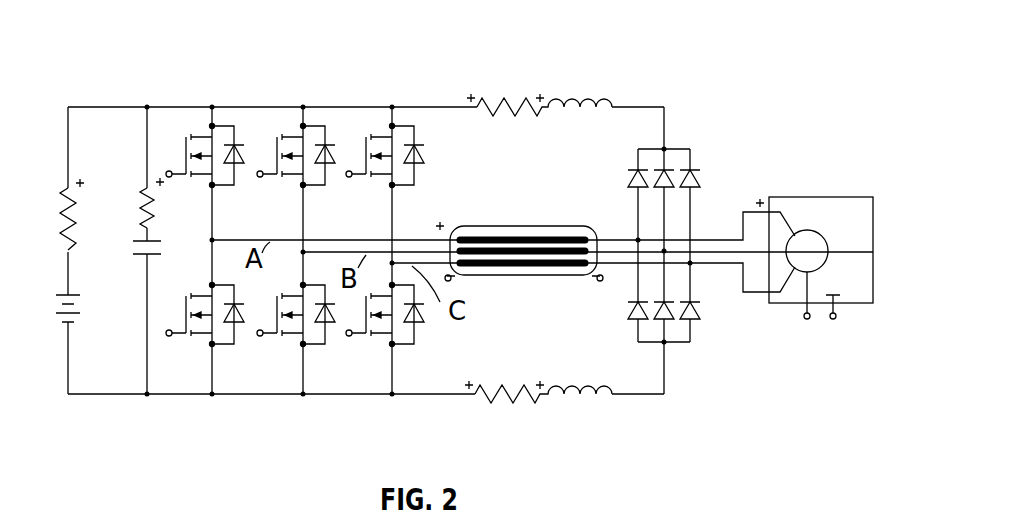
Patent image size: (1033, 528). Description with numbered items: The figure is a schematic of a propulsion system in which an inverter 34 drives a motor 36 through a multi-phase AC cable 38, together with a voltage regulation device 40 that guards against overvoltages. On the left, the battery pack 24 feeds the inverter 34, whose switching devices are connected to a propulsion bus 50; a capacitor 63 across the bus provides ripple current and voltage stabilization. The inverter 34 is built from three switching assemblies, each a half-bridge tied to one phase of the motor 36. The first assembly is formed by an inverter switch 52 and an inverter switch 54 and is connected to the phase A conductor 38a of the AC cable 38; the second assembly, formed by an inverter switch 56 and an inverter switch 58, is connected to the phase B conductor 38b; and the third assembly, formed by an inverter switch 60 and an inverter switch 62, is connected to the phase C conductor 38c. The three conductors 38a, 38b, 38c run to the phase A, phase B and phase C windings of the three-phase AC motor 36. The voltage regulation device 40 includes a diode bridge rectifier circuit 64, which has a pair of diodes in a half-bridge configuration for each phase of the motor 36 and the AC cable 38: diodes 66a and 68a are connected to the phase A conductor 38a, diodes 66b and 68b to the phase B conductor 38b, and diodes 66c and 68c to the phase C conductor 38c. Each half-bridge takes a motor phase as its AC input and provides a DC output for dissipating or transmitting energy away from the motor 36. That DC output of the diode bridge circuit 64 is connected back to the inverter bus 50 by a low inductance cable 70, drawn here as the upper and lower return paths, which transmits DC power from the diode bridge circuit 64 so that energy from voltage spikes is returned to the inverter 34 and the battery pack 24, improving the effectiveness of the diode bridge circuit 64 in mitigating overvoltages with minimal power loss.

The battery pack 24 is at (70, 295).
The inverter 34 is at (280, 72).
The motor 36 is at (852, 305).
The AC cable 38 is at (486, 279).
The phase A conductor 38a is at (482, 234).
The phase B conductor 38b is at (549, 240).
The phase C conductor 38c is at (540, 280).
The voltage regulation device 40 is at (705, 72).
The propulsion bus 50 is at (323, 107).
The inverter switch 52 is at (224, 188).
The inverter switch 54 is at (224, 346).
The inverter switch 56 is at (315, 188).
The inverter switch 58 is at (315, 346).
The inverter switch 60 is at (404, 188).
The inverter switch 62 is at (404, 346).
The capacitor 63 is at (150, 258).
The diode bridge rectifier circuit 64 is at (728, 352).
The diode 66a is at (634, 168).
The diode 66b is at (667, 168).
The diode 66c is at (701, 172).
The diode 68a is at (634, 322).
The diode 68b is at (668, 322).
The diode 68c is at (698, 321).
The low inductance cable 70 is at (640, 107).